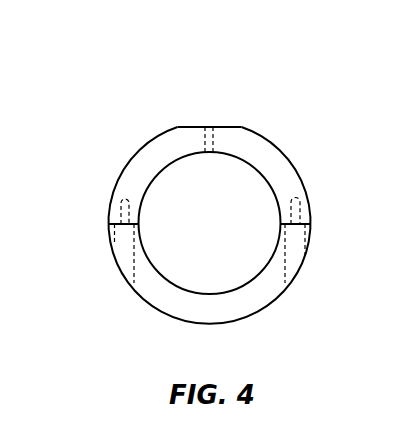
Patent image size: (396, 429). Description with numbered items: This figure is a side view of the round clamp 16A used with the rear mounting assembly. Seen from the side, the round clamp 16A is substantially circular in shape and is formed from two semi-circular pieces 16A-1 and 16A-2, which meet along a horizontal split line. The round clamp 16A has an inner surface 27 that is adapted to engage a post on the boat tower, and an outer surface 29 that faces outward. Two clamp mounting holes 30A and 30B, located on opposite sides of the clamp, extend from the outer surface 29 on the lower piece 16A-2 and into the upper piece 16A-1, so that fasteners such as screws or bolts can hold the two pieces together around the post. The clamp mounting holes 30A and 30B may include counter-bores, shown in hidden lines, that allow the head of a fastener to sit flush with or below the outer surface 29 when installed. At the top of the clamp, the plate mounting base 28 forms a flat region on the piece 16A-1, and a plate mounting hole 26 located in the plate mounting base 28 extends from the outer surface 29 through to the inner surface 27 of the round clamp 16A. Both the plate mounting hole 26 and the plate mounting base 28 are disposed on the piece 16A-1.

The round clamp 16A is at (198, 200).
The semi-circular piece 16A-1 is at (135, 169).
The semi-circular piece 16A-2 is at (168, 303).
The plate mounting hole 26 is at (222, 126).
The inner surface 27 is at (253, 172).
The plate mounting base 28 is at (200, 126).
The outer surface 29 is at (275, 146).
The clamp mounting hole 30A is at (114, 246).
The clamp mounting hole 30B is at (302, 243).